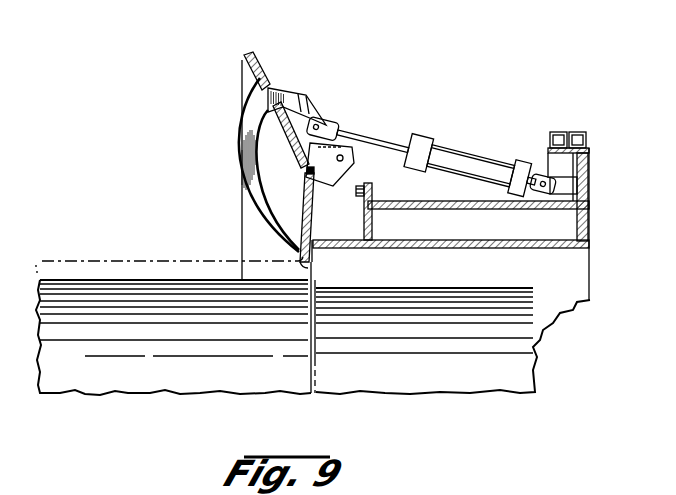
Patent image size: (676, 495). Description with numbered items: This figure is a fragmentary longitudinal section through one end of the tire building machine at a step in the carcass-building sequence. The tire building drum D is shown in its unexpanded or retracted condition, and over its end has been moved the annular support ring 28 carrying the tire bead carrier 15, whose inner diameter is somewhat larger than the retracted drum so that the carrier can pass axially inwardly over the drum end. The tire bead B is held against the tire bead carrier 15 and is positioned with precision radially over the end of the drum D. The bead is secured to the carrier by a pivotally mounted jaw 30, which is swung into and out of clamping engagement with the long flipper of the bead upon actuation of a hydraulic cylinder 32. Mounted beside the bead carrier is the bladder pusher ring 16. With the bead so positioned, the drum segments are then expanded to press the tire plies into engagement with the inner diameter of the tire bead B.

The bladder pusher ring 16 is at (250, 62).
The pivotally mounted jaws 30 is at (245, 143).
The tire bead carrier 15 is at (306, 182).
The tire bead B is at (296, 216).
The tire building drum D is at (122, 278).
The hydraulic cylinder 32 is at (467, 153).
The annular support ring 28 is at (517, 250).